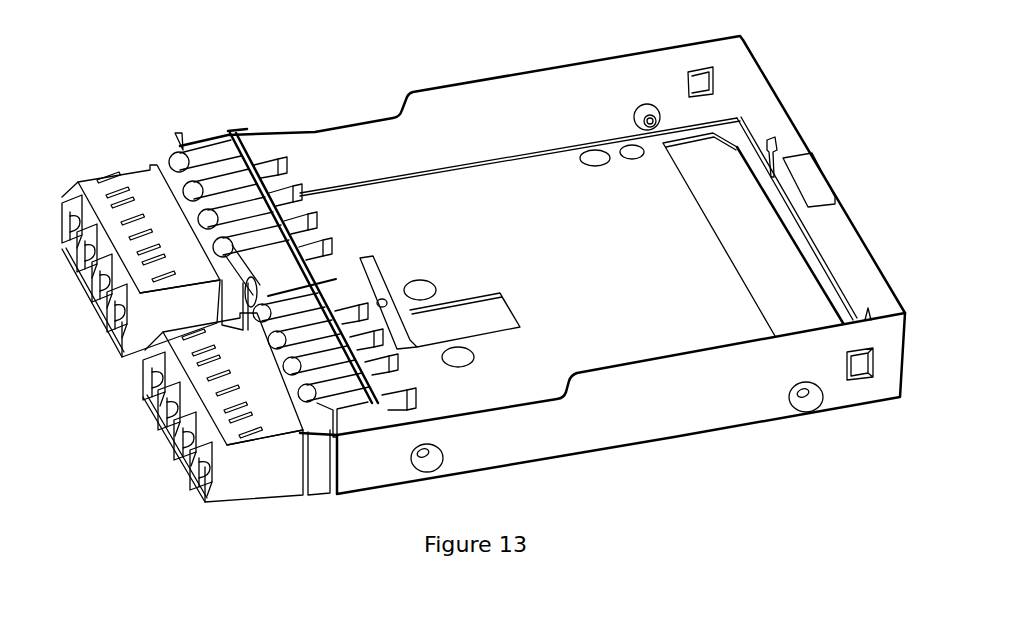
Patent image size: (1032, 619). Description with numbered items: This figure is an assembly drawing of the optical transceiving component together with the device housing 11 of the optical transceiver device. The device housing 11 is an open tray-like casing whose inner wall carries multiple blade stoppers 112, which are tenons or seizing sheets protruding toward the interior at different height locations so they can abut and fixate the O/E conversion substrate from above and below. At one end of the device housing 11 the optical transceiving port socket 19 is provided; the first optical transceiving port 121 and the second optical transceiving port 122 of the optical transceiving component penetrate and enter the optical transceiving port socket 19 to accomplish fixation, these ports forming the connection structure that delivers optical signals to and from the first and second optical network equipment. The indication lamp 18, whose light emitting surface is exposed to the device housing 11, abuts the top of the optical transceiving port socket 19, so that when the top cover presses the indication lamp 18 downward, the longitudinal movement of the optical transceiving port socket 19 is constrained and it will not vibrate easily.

The device housing 11 is at (635, 403).
The indication lamp 18 is at (212, 141).
The optical transceiving port socket 19 is at (140, 188).
The blade stoppers 112 is at (700, 82).
The first optical transceiving port 121 is at (263, 162).
The second optical transceiving port 122 is at (320, 237).